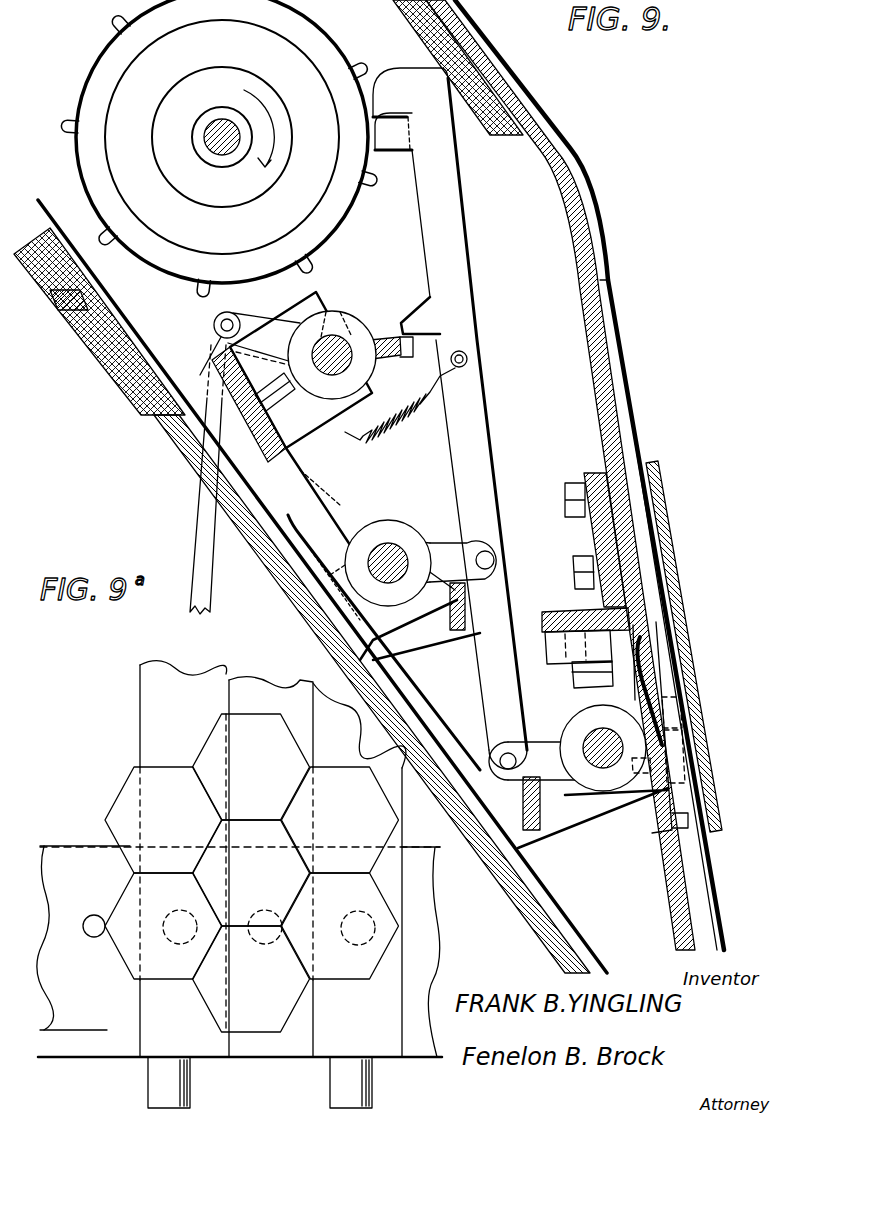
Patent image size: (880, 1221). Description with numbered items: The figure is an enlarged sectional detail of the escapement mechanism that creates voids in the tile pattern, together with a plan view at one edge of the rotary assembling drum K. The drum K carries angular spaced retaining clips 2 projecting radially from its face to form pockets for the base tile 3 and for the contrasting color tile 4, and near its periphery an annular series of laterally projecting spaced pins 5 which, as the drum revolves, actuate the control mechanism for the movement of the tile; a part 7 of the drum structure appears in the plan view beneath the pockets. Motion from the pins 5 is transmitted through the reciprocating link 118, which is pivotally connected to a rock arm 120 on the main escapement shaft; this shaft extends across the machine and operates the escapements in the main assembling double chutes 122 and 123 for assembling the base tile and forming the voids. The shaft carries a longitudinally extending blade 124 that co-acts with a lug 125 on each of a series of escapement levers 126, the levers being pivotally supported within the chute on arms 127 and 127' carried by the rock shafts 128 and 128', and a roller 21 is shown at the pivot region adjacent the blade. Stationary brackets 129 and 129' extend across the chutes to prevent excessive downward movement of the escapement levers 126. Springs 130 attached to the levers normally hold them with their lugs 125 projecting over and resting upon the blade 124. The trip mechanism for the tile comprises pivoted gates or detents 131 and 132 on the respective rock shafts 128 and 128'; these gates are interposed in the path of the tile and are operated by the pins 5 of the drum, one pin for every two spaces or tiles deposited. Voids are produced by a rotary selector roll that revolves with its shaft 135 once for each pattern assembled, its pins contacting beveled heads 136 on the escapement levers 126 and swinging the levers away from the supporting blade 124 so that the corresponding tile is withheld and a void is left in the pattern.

In FIG. 9, the shaft 135 is at (226, 150).
In FIG. 9, the beveled head 136 is at (383, 92).
In FIG. 9, the escapement lever 126 is at (460, 272).
In FIG. 9, the lug 125 is at (413, 322).
In FIG. 9, the roller 21 is at (338, 310).
In FIG. 9, the rock arm 120 is at (283, 305).
In FIG. 9, the blade 124 is at (433, 338).
In FIG. 9, the spring 130 is at (414, 420).
In FIG. 9, the rock shaft 128 is at (395, 536).
In FIG. 9, the arm 127 is at (476, 520).
In FIG. 9, the stationary bracket 129 is at (453, 640).
In FIG. 9, the gate 131 is at (360, 642).
In FIG. 9, the main assembling double chute 122 is at (162, 405).
In FIG. 9, the reciprocating link 118 is at (205, 528).
In FIG. 9, the main assembling double chute 123 is at (632, 428).
In FIG. 9, the gate 132 is at (690, 818).
In FIG. 9, the arm 127' is at (549, 789).
In FIG. 9, the rock shaft 128' is at (606, 779).
In FIG. 9, the stationary bracket 129' is at (566, 837).
In FIG. 9, the base tile 3 is at (300, 574).
In FIG. 9a, the base tile 3 is at (176, 965).
In FIG. 9a, the retaining clip 2 is at (378, 886).
In FIG. 9a, the contrasting color tile 4 is at (212, 748).
In FIG. 9a, the pin 5 is at (192, 1100).
In FIG. 9a, the base plate 7 is at (382, 1050).
In FIG. 9a, the rotary drum K is at (66, 1044).